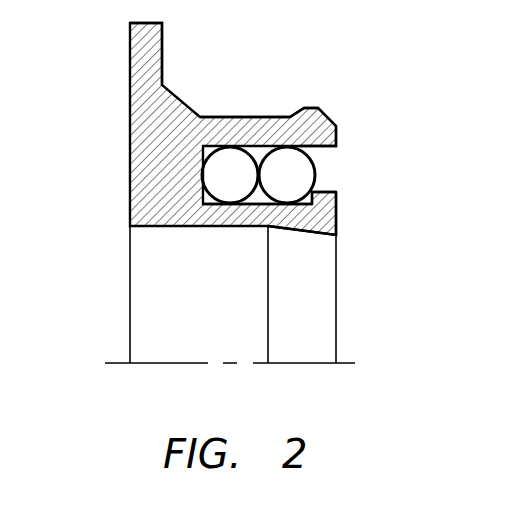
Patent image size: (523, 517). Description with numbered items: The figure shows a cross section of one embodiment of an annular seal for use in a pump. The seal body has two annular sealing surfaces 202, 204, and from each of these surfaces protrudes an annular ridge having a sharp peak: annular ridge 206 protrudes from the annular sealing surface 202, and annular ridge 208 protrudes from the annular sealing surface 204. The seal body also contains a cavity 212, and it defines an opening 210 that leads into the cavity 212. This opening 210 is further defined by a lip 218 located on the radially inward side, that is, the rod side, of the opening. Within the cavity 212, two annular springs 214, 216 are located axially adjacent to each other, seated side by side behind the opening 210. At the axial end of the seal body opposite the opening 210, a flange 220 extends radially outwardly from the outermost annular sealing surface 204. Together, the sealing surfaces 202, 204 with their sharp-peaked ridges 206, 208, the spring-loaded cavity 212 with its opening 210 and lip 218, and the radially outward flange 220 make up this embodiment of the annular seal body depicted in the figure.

The annular sealing surface 202 is at (185, 227).
The annular sealing surface 204 is at (230, 117).
The annular ridge 206 is at (337, 235).
The annular ridge 208 is at (305, 107).
The opening 210 is at (328, 153).
The cavity 212 is at (258, 198).
The annular spring 214 is at (217, 147).
The annular spring 216 is at (318, 177).
The lip 218 is at (333, 188).
The flange 220 is at (128, 67).